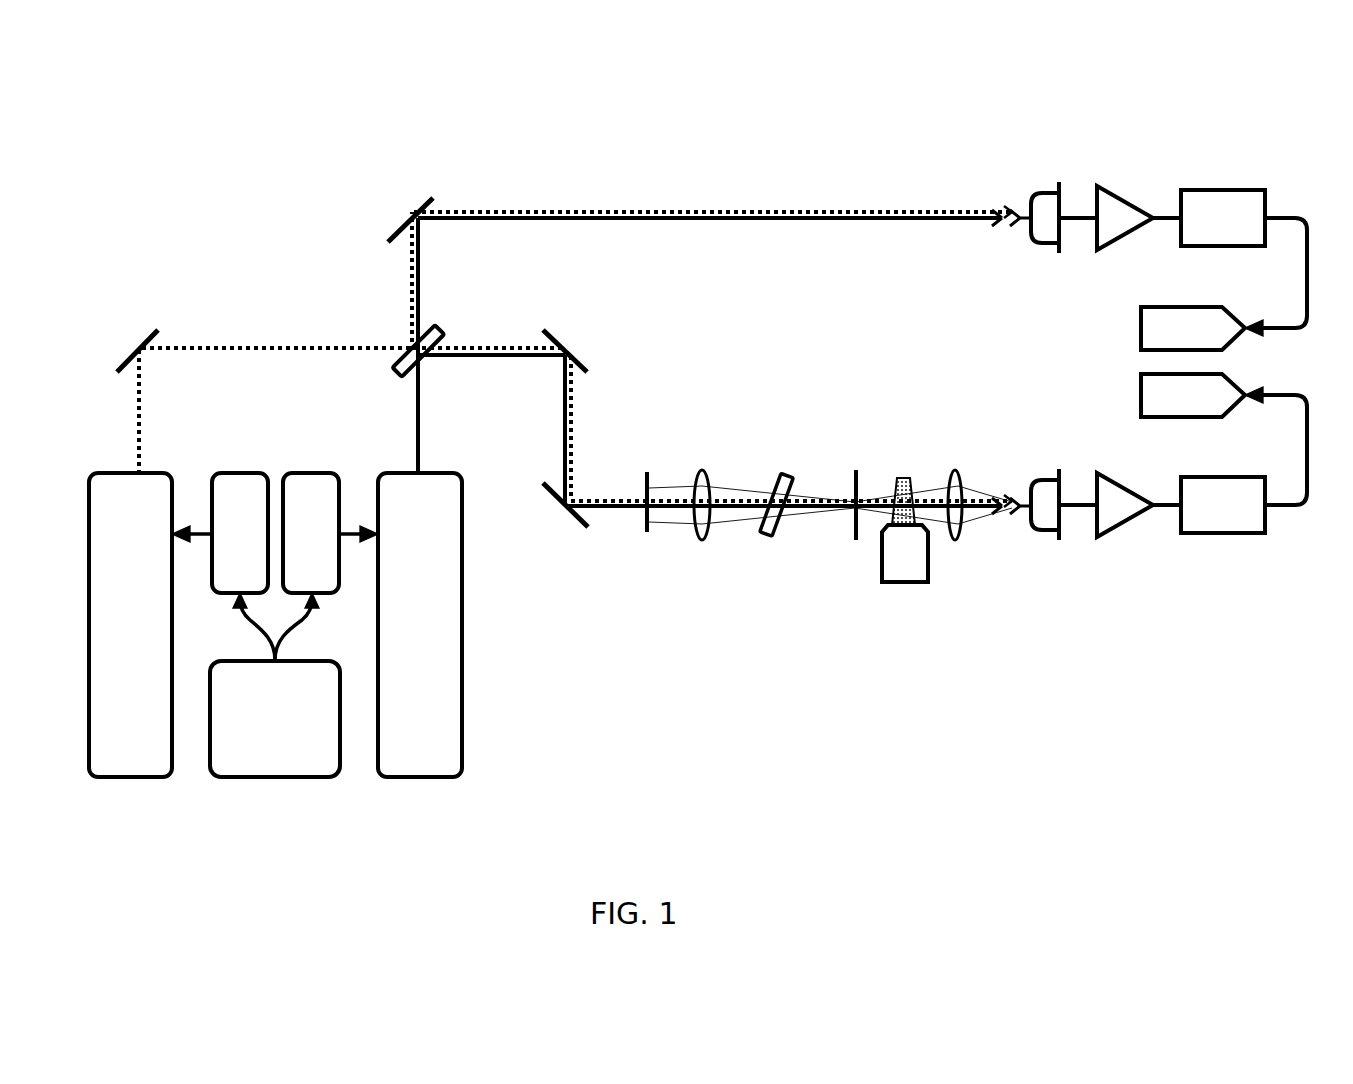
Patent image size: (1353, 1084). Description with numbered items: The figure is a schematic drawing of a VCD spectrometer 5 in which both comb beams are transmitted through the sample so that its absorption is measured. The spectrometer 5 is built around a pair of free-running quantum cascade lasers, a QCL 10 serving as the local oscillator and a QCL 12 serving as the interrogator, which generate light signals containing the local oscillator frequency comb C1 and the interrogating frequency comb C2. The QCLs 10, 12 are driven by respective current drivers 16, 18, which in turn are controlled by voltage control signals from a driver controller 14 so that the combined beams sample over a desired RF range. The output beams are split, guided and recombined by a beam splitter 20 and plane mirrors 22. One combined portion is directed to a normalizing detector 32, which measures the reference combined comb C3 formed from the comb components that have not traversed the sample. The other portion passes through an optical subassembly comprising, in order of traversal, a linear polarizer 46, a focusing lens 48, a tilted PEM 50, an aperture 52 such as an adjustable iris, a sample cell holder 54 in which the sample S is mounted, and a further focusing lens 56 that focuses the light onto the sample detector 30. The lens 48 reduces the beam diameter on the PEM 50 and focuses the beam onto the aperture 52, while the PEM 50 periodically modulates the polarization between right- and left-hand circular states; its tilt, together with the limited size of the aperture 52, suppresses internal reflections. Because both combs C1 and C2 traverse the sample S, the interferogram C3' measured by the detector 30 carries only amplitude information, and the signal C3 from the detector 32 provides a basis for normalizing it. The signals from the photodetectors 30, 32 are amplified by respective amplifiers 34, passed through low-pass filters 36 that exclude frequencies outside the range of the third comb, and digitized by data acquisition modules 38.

The VCD spectrometer 5 is at (233, 162).
The QCL serving as local oscillator 10 is at (130, 778).
The QCL serving as interrogator 12 is at (413, 778).
The driver controller 14 is at (258, 778).
The current driver 16 is at (210, 490).
The current driver 18 is at (341, 582).
The beam splitter 20 is at (430, 362).
The plane mirror 22 is at (148, 338).
The sample detector 30 is at (1045, 532).
The normalizing detector 32 is at (1048, 190).
The amplifier 34 is at (1118, 190).
The low-pass filter 36 is at (1214, 190).
The data acquisition module 38 is at (1140, 376).
The linear polarizer 46 is at (648, 537).
The focusing lens 48 is at (703, 542).
The PEM 50 is at (770, 538).
The aperture 52 is at (856, 544).
The sample cell holder 54 is at (901, 584).
The further focusing lens 56 is at (956, 542).
The sample S is at (901, 476).
The local oscillator frequency comb C1 is at (262, 344).
The interrogating frequency comb C2 is at (416, 406).
The reference combined comb C3 is at (1016, 292).
The measurement interferogram C3' is at (1018, 448).